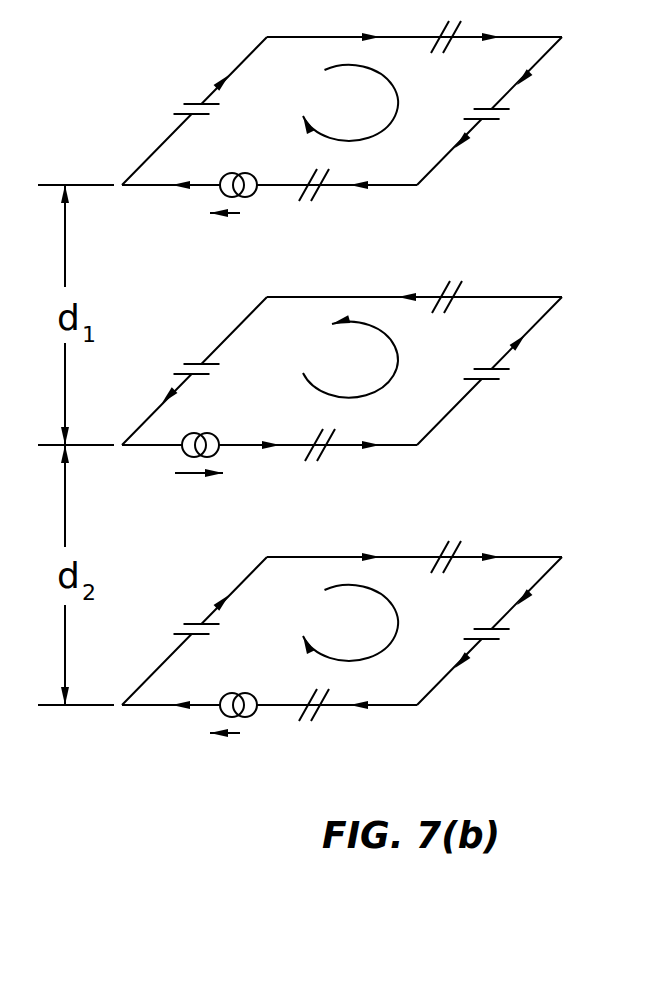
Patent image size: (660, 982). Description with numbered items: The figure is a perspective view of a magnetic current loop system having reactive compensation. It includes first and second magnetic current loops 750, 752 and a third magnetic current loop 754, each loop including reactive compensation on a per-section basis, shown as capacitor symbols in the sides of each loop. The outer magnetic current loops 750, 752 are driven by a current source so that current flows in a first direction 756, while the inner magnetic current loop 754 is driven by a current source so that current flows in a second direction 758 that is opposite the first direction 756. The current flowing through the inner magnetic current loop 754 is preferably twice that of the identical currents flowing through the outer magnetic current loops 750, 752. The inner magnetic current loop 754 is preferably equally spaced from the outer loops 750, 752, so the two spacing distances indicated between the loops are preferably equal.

The first magnetic current loop 750 is at (545, 578).
The second magnetic current loop 752 is at (545, 58).
The third magnetic current loop 754 is at (545, 318).
The first direction 756 is at (380, 120).
The second direction 758 is at (380, 380).